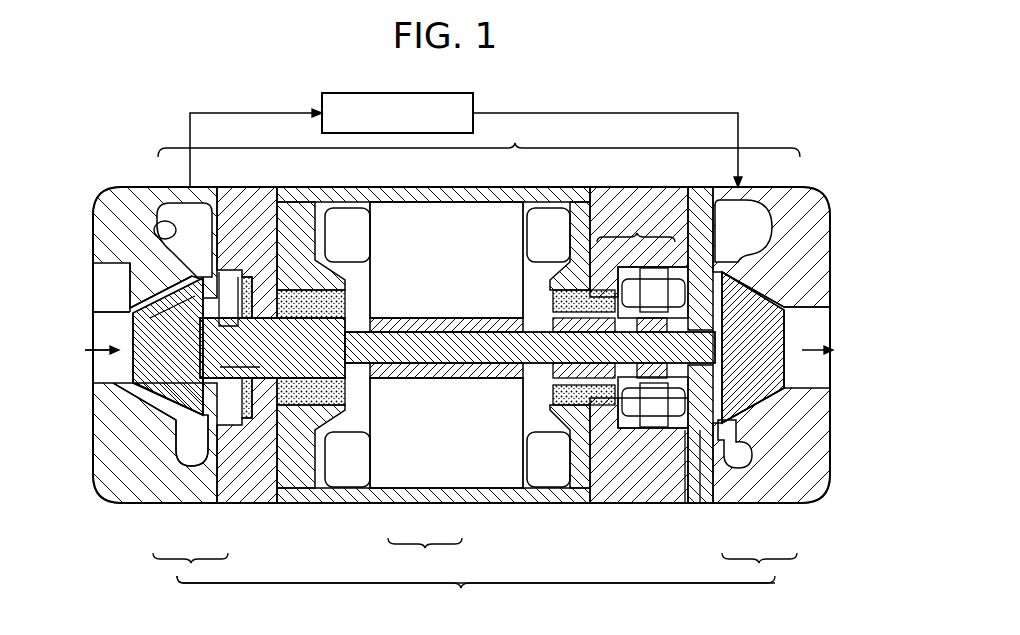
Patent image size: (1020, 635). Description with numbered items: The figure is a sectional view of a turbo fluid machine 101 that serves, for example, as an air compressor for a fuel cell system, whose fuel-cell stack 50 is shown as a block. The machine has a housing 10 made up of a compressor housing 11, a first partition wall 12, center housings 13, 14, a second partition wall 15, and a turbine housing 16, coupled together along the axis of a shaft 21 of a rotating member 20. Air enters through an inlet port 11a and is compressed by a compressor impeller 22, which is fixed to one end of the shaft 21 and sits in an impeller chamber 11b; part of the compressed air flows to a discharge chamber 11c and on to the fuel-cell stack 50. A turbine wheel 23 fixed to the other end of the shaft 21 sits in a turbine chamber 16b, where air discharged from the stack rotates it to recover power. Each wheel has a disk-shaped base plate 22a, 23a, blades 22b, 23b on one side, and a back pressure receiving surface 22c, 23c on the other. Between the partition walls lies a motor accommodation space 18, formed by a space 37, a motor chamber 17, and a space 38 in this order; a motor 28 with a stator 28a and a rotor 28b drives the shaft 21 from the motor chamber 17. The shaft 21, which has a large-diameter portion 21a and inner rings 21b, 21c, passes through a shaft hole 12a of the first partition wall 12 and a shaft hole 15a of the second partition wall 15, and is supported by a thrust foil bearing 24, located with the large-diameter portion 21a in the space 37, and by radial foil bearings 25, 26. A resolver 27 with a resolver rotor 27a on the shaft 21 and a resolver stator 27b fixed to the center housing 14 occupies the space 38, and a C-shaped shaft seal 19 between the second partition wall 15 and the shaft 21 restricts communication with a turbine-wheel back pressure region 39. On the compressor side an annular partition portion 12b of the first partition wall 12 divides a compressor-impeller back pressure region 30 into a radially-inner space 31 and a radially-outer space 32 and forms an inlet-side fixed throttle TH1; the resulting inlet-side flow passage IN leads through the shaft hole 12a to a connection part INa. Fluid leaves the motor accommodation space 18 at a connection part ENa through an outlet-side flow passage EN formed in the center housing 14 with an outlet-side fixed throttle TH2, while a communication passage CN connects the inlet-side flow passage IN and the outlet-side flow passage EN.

The turbo fluid machine 101 is at (146, 140).
The housing 10 is at (479, 142).
The compressor housing 11 is at (176, 187).
The inlet port 11a is at (102, 385).
The impeller chamber 11b is at (152, 392).
The discharge chamber 11c is at (156, 238).
The first partition wall 12 is at (252, 187).
The shaft hole 12a is at (238, 340).
The partition portion 12b is at (214, 293).
The center housing 13 is at (453, 187).
The center housing 14 is at (637, 187).
The second partition wall 15 is at (699, 187).
The shaft hole 15a is at (697, 356).
The turbine housing 16 is at (787, 187).
The turbine chamber 16b is at (770, 292).
The motor chamber 17 is at (499, 205).
The motor accommodation space 18 is at (360, 225).
The shaft seal 19 is at (738, 365).
The rotating member 20 is at (476, 591).
The shaft 21 is at (485, 365).
The large-diameter portion 21a is at (267, 327).
The inner ring 21b is at (333, 342).
The inner ring 21c is at (592, 340).
The compressor impeller 22 is at (180, 430).
The base plate 22a is at (200, 415).
The blades 22b is at (165, 400).
The back pressure receiving surface 22c is at (202, 373).
The turbine wheel 23 is at (759, 427).
The base plate 23a is at (730, 400).
The blades 23b is at (772, 405).
The back pressure receiving surface 23c is at (728, 268).
The thrust foil bearing 24 is at (248, 420).
The radial foil bearing 25 is at (285, 406).
The radial foil bearing 26 is at (605, 400).
The resolver 27 is at (642, 322).
The resolver rotor 27a is at (624, 292).
The resolver stator 27b is at (653, 290).
The motor 28 is at (446, 442).
The stator 28a is at (399, 462).
The rotor 28b is at (434, 380).
The compressor-impeller back pressure region 30 is at (131, 300).
The radially-inner space 31 is at (195, 322).
The radially-outer space 32 is at (188, 278).
The space 37 is at (265, 504).
The space 38 is at (740, 338).
The turbine-wheel back pressure region 39 is at (718, 321).
The fuel-cell stack 50 is at (476, 108).
The inlet-side flow passage IN is at (200, 344).
The connection part INa is at (255, 367).
The outlet-side flow passage EN is at (703, 504).
The connection part ENa is at (673, 422).
The inlet-side fixed throttle TH1 is at (200, 298).
The outlet-side fixed throttle TH2 is at (683, 506).
The communication passage CN is at (462, 332).